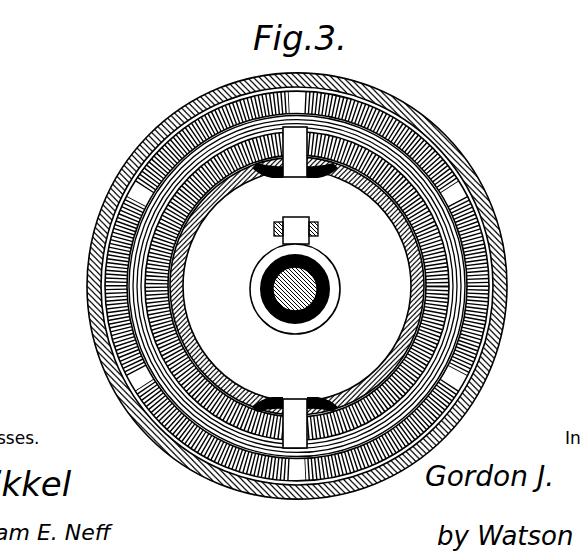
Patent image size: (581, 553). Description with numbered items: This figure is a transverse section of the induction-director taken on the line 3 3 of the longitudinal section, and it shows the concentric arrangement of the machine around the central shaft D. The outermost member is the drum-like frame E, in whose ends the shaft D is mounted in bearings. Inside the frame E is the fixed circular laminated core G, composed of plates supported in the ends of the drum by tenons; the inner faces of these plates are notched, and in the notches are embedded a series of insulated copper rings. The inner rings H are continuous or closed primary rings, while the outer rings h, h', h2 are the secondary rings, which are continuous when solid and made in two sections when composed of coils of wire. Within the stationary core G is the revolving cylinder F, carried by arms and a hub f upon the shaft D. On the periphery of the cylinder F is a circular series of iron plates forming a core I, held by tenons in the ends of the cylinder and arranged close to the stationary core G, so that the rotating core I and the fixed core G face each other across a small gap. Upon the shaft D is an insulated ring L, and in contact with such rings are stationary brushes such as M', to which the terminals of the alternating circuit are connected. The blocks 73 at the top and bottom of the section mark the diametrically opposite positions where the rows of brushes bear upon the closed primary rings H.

The section line 3 is at (410, 0).
The drum-like frame E is at (148, 145).
The fixed circular laminated core G is at (437, 168).
The inner rings H is at (140, 245).
The outer ring h is at (257, 286).
The outer ring h' is at (255, 286).
The outer ring h2 is at (122, 317).
The core I is at (445, 273).
The revolving cylinder F is at (180, 277).
The arms and hub f is at (297, 285).
The pole blocks 73 is at (295, 287).
The stationary brush M' is at (296, 217).
The insulated ring L is at (321, 314).
The shaft D is at (330, 275).